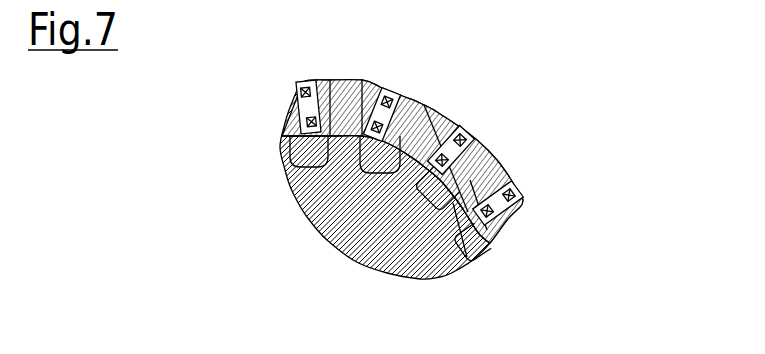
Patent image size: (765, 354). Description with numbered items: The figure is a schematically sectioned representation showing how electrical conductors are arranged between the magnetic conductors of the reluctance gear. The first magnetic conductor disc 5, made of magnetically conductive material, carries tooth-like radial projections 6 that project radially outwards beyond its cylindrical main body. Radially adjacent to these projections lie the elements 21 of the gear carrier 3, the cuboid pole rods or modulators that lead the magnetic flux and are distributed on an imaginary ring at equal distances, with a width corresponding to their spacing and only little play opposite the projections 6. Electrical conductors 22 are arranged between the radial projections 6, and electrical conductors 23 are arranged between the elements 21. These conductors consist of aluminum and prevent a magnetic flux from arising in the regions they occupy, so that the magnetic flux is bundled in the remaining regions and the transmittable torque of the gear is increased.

The gear carrier 3 is at (381, 157).
The first magnetic conductor disc 5 is at (343, 243).
The radial projections 6 is at (408, 160).
The elements 21 is at (468, 153).
The electrical conductors 22 is at (307, 151).
The electrical conductors 23 is at (357, 88).